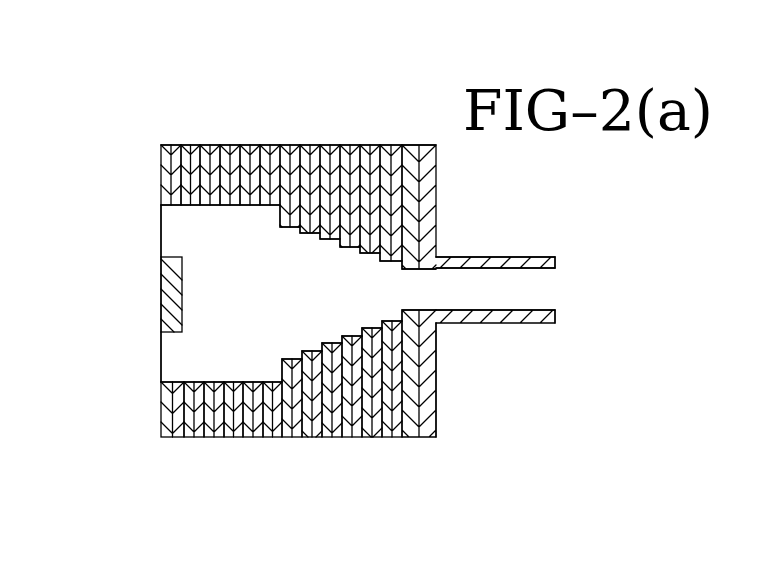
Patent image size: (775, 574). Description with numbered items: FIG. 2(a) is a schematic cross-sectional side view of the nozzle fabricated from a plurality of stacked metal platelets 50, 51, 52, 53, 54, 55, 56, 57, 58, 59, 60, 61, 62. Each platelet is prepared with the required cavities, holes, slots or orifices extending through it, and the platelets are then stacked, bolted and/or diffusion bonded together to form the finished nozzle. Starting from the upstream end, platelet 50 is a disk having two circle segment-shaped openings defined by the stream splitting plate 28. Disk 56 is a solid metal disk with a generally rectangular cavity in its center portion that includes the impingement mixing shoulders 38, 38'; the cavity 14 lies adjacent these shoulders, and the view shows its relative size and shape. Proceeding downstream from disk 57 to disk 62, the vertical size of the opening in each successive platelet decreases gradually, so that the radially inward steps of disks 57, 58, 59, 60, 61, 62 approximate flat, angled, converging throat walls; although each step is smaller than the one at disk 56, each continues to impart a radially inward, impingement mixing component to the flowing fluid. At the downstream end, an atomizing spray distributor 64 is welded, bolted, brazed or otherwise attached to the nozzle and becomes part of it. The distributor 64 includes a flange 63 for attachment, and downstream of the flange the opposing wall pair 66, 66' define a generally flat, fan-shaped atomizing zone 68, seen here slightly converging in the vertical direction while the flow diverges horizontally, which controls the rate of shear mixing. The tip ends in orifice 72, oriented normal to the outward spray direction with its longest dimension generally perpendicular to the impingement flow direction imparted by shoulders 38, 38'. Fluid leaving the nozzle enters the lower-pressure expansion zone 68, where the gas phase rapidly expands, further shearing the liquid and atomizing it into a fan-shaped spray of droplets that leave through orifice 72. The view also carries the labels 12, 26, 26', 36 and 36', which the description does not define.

The apparatus body 12 is at (170, 146).
The cavity 14 is at (311, 290).
The side wall portion 26 is at (121, 231).
The side wall portion 26' is at (121, 357).
The stream splitting plate 28 is at (161, 296).
The upper inner surface 36 is at (177, 195).
The lower inner surface 36' is at (178, 394).
The impingement mixing shoulder 38 is at (330, 240).
The impingement mixing shoulder 38' is at (330, 346).
The metal platelet 50 is at (175, 438).
The metal platelet 51 is at (192, 145).
The metal platelet 52 is at (212, 438).
The metal platelet 53 is at (232, 145).
The metal platelet 54 is at (255, 438).
The metal platelet 55 is at (272, 145).
The disk 56 is at (293, 438).
The disk 57 is at (312, 145).
The disk 58 is at (333, 440).
The disk 59 is at (352, 145).
The disk 60 is at (372, 440).
The disk 61 is at (392, 145).
The disk 62 is at (414, 440).
The flange 63 is at (436, 397).
The atomizing spray distributor 64 is at (534, 257).
The wall 66 is at (495, 229).
The wall 66' is at (509, 340).
The atomizing zone 68 is at (441, 302).
The orifice 72 is at (552, 289).